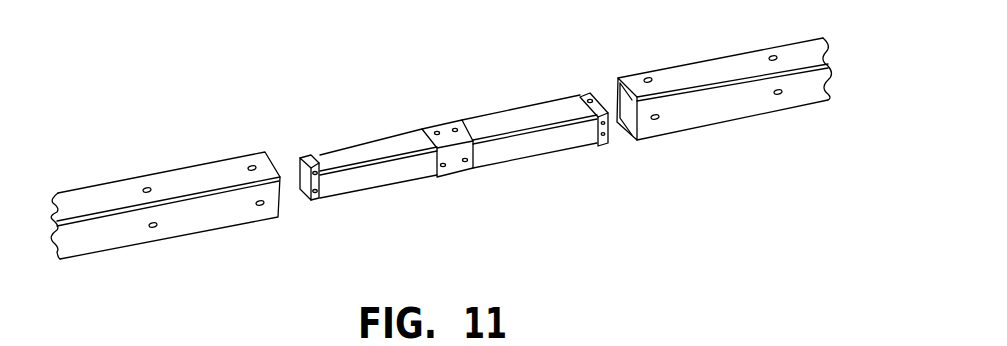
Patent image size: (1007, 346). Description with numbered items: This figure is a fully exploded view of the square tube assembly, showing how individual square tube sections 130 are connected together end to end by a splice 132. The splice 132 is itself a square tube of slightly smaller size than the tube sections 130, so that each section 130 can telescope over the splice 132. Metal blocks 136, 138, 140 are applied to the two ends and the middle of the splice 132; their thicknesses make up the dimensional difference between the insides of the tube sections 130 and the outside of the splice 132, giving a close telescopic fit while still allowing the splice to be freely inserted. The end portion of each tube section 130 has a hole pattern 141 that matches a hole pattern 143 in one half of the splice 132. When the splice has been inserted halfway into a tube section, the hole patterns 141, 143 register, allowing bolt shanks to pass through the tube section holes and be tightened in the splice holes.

The square tube section 130 is at (117, 179).
The splice 132 is at (478, 118).
The metal block 136 is at (308, 159).
The metal block 138 is at (470, 172).
The metal block 140 is at (586, 95).
The hole pattern 141 is at (252, 167).
The hole pattern 143 is at (313, 167).